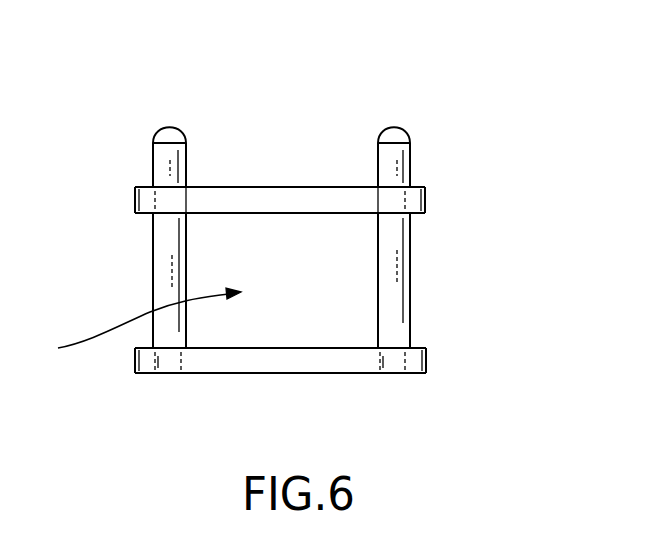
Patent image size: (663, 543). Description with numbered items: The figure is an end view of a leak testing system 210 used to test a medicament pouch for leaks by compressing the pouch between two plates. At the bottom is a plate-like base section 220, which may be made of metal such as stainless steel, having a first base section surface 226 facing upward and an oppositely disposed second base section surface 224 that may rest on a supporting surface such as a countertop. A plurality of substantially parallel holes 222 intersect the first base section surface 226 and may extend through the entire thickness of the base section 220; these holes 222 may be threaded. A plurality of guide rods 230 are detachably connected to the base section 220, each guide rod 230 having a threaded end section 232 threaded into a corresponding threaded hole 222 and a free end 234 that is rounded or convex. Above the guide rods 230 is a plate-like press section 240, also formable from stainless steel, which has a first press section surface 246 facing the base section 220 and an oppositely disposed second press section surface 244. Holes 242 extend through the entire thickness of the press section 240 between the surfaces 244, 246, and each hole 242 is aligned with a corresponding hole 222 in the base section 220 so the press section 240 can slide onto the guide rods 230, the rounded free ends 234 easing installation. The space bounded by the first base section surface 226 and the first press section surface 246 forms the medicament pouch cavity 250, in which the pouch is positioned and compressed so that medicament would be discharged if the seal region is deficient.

The leak testing system 210 is at (486, 97).
The base section 220 is at (427, 360).
The holes 222 is at (188, 362).
The second base section surface 224 is at (288, 373).
The first base section surface 226 is at (268, 348).
The guide rods 230 is at (153, 273).
The threaded end section 232 is at (163, 362).
The free end 234 is at (163, 128).
The press section 240 is at (425, 200).
The holes 242 is at (186, 198).
The second press section surface 244 is at (279, 187).
The first press section surface 246 is at (295, 213).
The medicament pouch cavity 250 is at (131, 324).